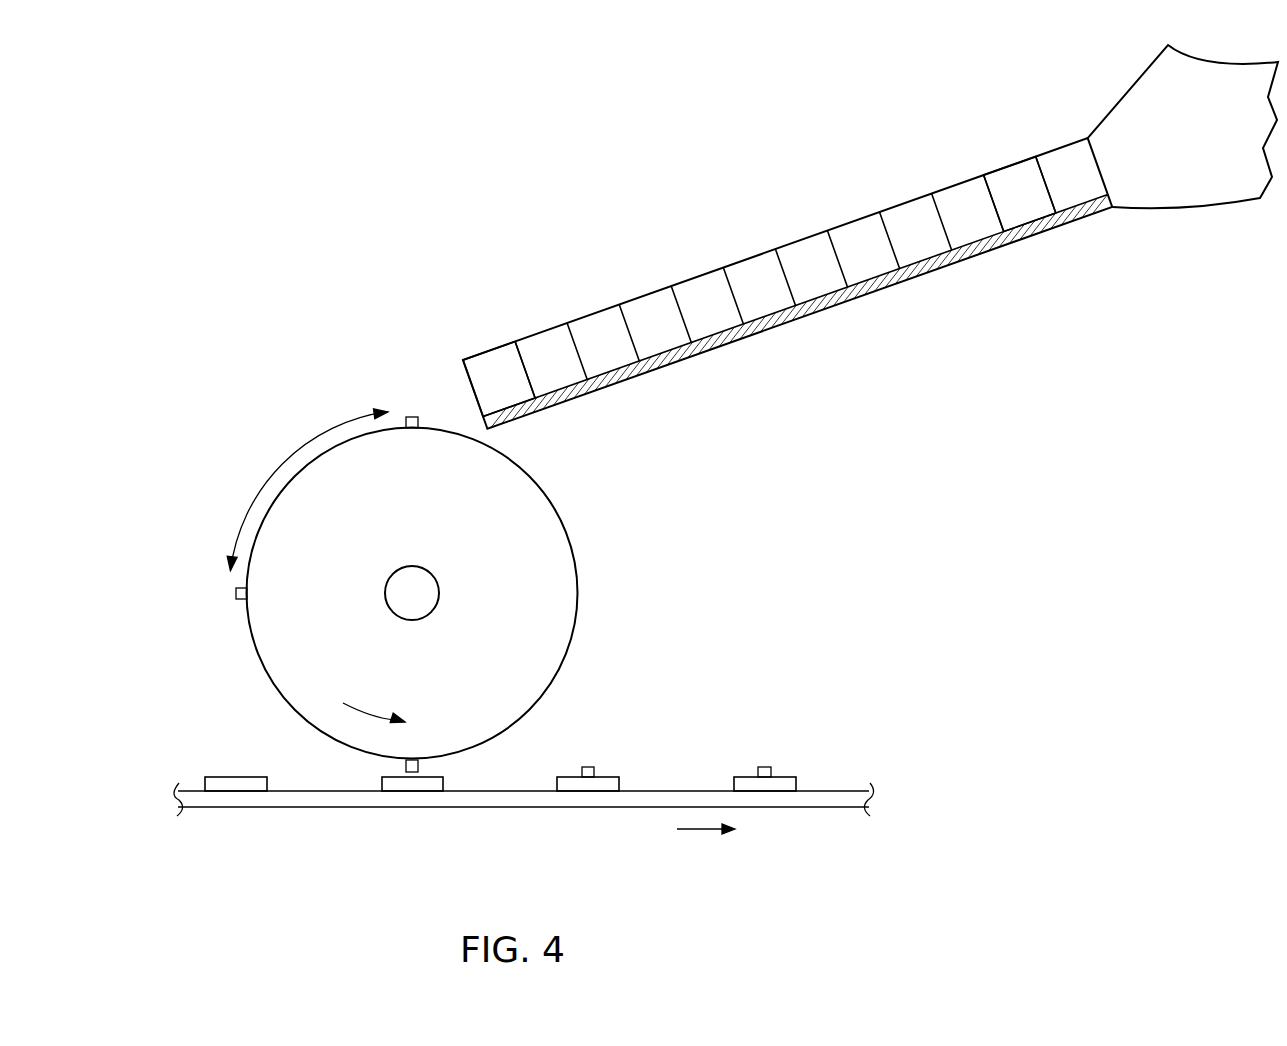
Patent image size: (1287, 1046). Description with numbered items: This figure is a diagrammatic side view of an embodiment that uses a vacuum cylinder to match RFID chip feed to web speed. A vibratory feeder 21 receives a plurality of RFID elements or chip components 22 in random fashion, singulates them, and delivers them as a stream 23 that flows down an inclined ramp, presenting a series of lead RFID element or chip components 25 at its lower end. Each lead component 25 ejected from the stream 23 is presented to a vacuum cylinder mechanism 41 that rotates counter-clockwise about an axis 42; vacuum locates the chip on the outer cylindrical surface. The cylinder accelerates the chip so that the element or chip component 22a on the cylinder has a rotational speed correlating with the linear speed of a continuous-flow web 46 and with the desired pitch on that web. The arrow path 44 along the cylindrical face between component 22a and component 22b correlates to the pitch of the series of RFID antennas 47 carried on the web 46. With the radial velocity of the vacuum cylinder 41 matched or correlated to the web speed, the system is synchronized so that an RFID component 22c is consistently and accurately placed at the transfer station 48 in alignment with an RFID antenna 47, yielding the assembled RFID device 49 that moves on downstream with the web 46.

The vibratory feeder 21 is at (1096, 113).
The RFID elements 22 is at (997, 185).
The element or chip component on the vacuum cylinder 22a is at (412, 417).
The component 22b is at (236, 593).
The RFID component 22c is at (418, 764).
The stream 23 is at (691, 268).
The lead RFID element or chip component 25 is at (478, 365).
The vacuum cylinder mechanism 41 is at (560, 590).
The axis 42 is at (430, 597).
The arrow path 44 is at (277, 468).
The continuous-flow web 46 is at (255, 802).
The RFID antennas 47 is at (267, 788).
The transfer station 48 is at (453, 812).
The RFID device 49 is at (742, 764).